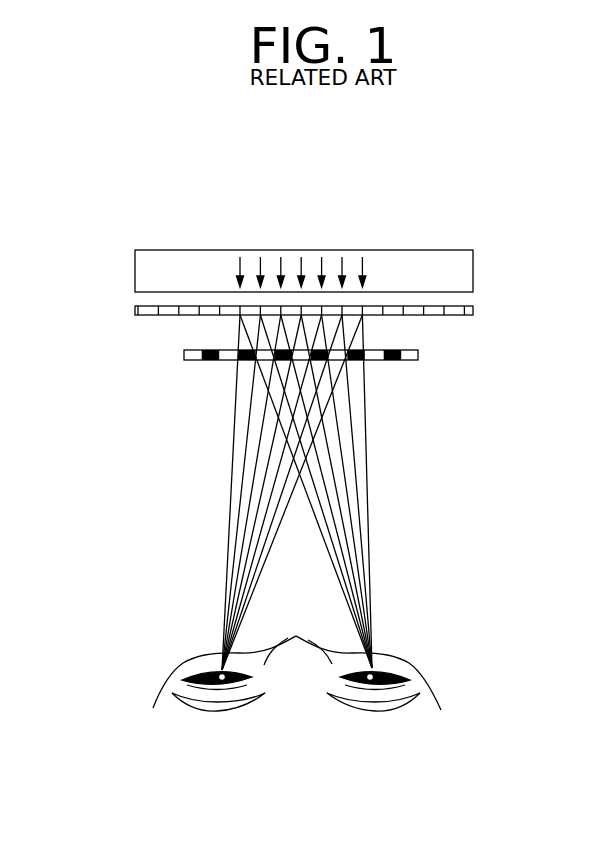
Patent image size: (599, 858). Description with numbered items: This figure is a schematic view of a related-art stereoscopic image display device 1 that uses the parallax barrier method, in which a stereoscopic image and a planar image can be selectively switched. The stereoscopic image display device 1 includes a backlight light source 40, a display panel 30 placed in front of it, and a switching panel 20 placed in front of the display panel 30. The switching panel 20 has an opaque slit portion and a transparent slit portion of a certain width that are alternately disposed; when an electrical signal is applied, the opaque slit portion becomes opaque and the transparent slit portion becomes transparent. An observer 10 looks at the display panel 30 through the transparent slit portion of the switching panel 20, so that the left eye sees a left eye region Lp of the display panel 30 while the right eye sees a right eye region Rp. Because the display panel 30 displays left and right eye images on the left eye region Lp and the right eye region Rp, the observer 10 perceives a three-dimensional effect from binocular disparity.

The stereoscopic image display device 1 is at (97, 256).
The observer 10 is at (427, 685).
The switching panel 20 is at (418, 357).
The display panel 30 is at (473, 312).
The backlight light source 40 is at (465, 275).
The right eye region Rp is at (292, 313).
The left eye region Lp is at (268, 311).